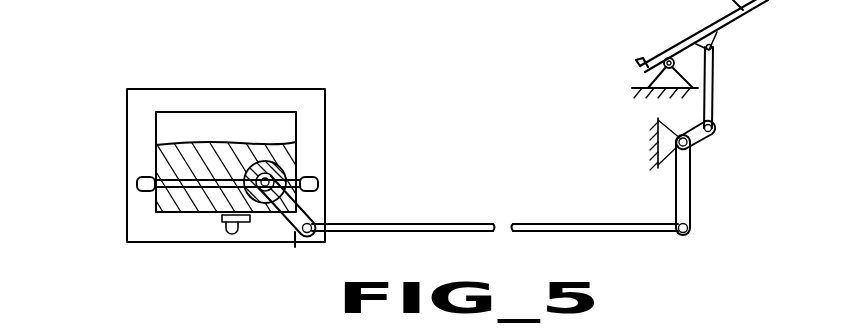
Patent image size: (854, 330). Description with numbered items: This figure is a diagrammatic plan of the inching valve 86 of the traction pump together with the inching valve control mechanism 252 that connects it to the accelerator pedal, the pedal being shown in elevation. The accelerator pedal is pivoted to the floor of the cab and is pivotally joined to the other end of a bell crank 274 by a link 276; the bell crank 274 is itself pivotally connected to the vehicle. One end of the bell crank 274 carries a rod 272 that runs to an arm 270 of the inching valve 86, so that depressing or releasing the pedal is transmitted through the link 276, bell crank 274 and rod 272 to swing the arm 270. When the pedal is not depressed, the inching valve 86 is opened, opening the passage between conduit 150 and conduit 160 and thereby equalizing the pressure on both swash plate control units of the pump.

The inching valve 86 is at (302, 160).
The conduit 150 is at (330, 180).
The conduit 160 is at (137, 183).
The inching valve control mechanism 252 is at (707, 25).
The arm 270 is at (240, 227).
The rod 272 is at (521, 208).
The bell crank 274 is at (687, 180).
The link 276 is at (713, 72).